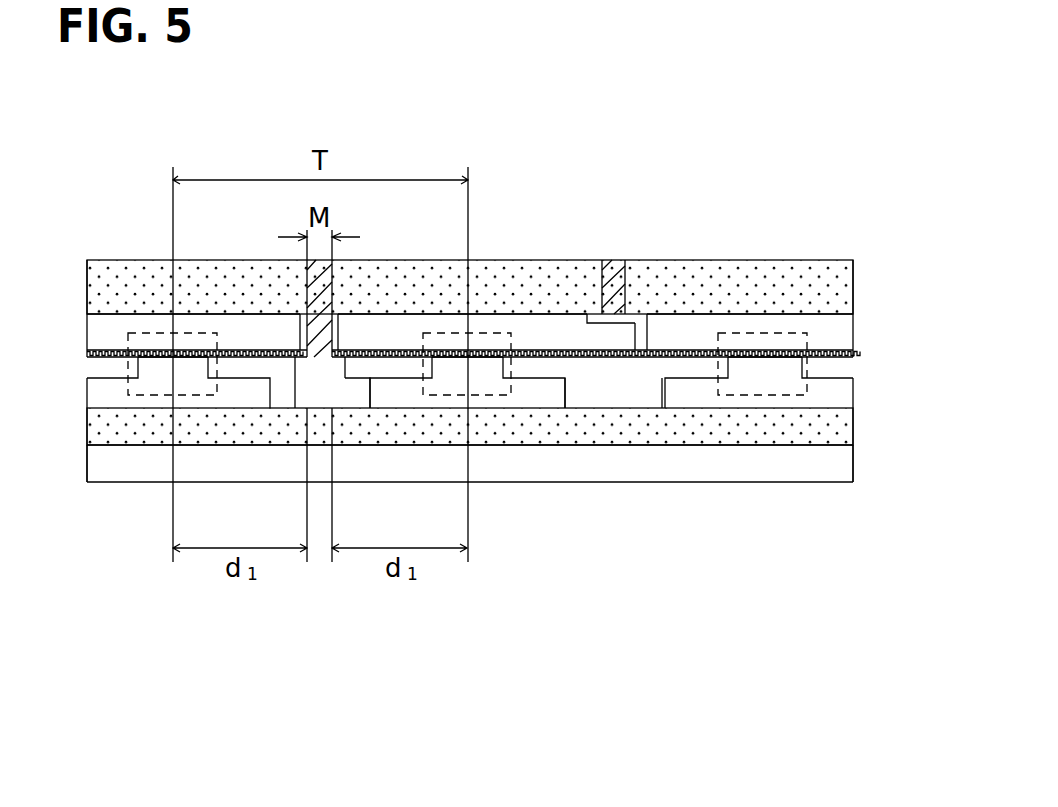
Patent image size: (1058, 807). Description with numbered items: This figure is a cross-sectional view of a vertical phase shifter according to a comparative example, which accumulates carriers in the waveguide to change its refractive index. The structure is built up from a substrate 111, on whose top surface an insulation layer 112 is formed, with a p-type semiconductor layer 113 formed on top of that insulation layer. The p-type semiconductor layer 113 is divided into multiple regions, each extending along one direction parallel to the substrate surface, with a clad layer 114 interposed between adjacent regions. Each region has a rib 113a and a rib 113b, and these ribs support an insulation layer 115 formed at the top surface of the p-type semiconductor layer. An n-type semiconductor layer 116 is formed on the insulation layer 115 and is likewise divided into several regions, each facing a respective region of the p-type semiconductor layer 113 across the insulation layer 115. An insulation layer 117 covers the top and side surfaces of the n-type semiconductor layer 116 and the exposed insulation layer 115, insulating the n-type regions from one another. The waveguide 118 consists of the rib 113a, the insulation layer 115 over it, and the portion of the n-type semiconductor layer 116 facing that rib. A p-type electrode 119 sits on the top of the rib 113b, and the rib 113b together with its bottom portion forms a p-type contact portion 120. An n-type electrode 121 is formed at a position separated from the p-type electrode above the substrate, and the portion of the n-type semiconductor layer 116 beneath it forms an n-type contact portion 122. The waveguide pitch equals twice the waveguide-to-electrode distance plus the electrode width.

The substrate 111 is at (838, 466).
The insulation layer 112 is at (838, 423).
The p-type semiconductor layer 113 is at (485, 403).
The rib 113a is at (483, 368).
The rib 113b is at (300, 372).
The clad layer 114 is at (617, 382).
The insulation layer 115 is at (848, 355).
The n-type semiconductor layer 116 is at (519, 328).
The insulation layer 117 is at (848, 298).
The waveguide 118 is at (752, 333).
The p-type electrode 119 is at (323, 283).
The p-type contact portion 120 is at (315, 388).
The n-type electrode 121 is at (612, 268).
The n-type contact portion 122 is at (588, 316).